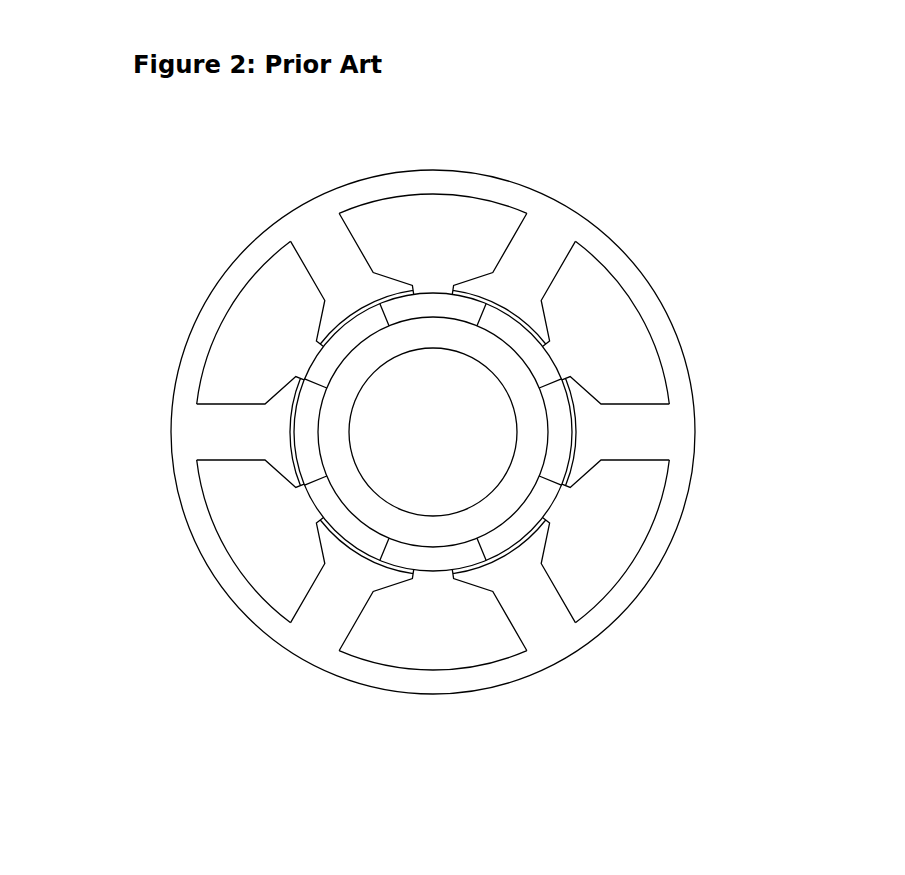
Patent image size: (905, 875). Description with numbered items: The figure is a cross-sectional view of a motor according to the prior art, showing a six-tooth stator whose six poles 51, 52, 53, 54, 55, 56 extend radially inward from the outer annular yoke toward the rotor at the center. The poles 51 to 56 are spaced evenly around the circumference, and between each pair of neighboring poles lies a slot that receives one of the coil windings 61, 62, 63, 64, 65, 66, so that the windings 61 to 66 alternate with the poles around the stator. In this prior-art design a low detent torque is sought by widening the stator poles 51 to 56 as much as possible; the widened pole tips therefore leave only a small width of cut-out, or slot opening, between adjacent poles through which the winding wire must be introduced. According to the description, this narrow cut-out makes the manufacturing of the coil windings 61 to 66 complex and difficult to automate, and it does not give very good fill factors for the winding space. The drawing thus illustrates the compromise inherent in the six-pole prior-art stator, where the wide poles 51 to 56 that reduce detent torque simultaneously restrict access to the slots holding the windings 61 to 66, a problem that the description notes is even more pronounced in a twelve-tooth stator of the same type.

The stator pole 51 is at (513, 578).
The stator pole 52 is at (347, 580).
The stator pole 53 is at (272, 430).
The stator pole 54 is at (345, 300).
The stator pole 55 is at (512, 300).
The stator pole 56 is at (587, 429).
The coil winding 61 is at (495, 633).
The coil winding 62 is at (290, 580).
The coil winding 63 is at (253, 375).
The coil winding 64 is at (382, 245).
The coil winding 65 is at (565, 300).
The coil winding 66 is at (623, 484).